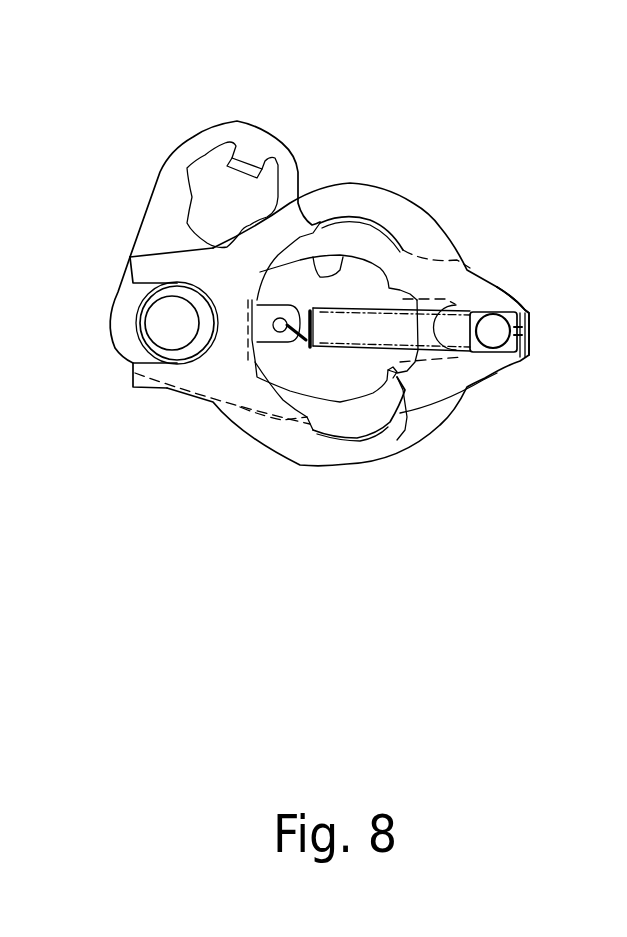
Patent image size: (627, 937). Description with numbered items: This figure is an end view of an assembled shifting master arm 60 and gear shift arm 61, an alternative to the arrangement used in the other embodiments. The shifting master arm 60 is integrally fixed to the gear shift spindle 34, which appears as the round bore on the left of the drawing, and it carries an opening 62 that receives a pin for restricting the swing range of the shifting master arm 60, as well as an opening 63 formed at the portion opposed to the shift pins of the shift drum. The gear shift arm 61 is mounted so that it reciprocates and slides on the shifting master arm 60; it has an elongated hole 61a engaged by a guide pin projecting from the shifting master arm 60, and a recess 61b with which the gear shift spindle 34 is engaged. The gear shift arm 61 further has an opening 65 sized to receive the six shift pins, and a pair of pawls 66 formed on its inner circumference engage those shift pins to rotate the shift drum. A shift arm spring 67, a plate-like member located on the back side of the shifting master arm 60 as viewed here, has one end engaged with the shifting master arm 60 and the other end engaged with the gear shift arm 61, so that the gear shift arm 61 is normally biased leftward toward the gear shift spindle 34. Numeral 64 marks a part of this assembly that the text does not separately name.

The gear shift spindle 34 is at (160, 325).
The shifting master arm 60 is at (168, 218).
The gear shift arm 61 is at (407, 213).
The elongated hole 61a is at (465, 315).
The recess 61b is at (137, 293).
The opening 62 is at (214, 187).
The opening 63 is at (343, 262).
The pin 64 is at (490, 340).
The opening 65 is at (290, 380).
The pawls 66 is at (440, 262).
The shift arm spring 67 is at (335, 348).